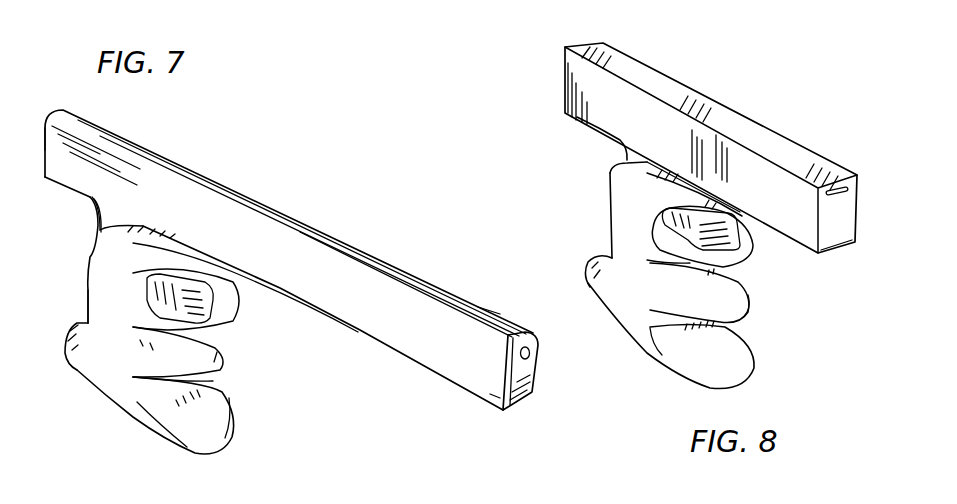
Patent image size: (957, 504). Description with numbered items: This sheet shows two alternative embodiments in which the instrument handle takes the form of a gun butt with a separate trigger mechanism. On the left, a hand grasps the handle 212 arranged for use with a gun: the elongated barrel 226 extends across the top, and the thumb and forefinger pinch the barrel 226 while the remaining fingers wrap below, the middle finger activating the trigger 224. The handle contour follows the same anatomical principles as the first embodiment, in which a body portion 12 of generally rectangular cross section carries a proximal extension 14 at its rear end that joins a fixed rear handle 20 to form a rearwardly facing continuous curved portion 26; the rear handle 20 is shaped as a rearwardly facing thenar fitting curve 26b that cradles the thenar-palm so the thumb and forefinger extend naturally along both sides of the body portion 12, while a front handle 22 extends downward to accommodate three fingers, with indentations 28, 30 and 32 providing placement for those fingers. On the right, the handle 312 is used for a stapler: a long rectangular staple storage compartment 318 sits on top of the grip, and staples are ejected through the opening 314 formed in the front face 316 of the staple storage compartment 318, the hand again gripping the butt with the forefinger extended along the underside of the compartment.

In FIG. 7, the body portion 12 is at (211, 180).
In FIG. 7, the proximal extension 14 is at (44, 140).
In FIG. 7, the rear handle 20 is at (88, 290).
In FIG. 7, the front handle 22 is at (213, 380).
In FIG. 7, the continuous curved portion 26 is at (88, 313).
In FIG. 7, the thenar fitting curve 26b is at (97, 226).
In FIG. 7, the indentation 28 is at (200, 287).
In FIG. 7, the indentation 30 is at (197, 353).
In FIG. 7, the indentation 32 is at (205, 398).
In FIG. 7, the handle 212 is at (117, 381).
In FIG. 7, the trigger 224 is at (205, 303).
In FIG. 7, the barrel 226 is at (530, 353).
In FIG. 8, the handle 312 is at (677, 328).
In FIG. 8, the opening 314 is at (847, 192).
In FIG. 8, the front face 316 is at (843, 235).
In FIG. 8, the staple storage compartment 318 is at (677, 83).